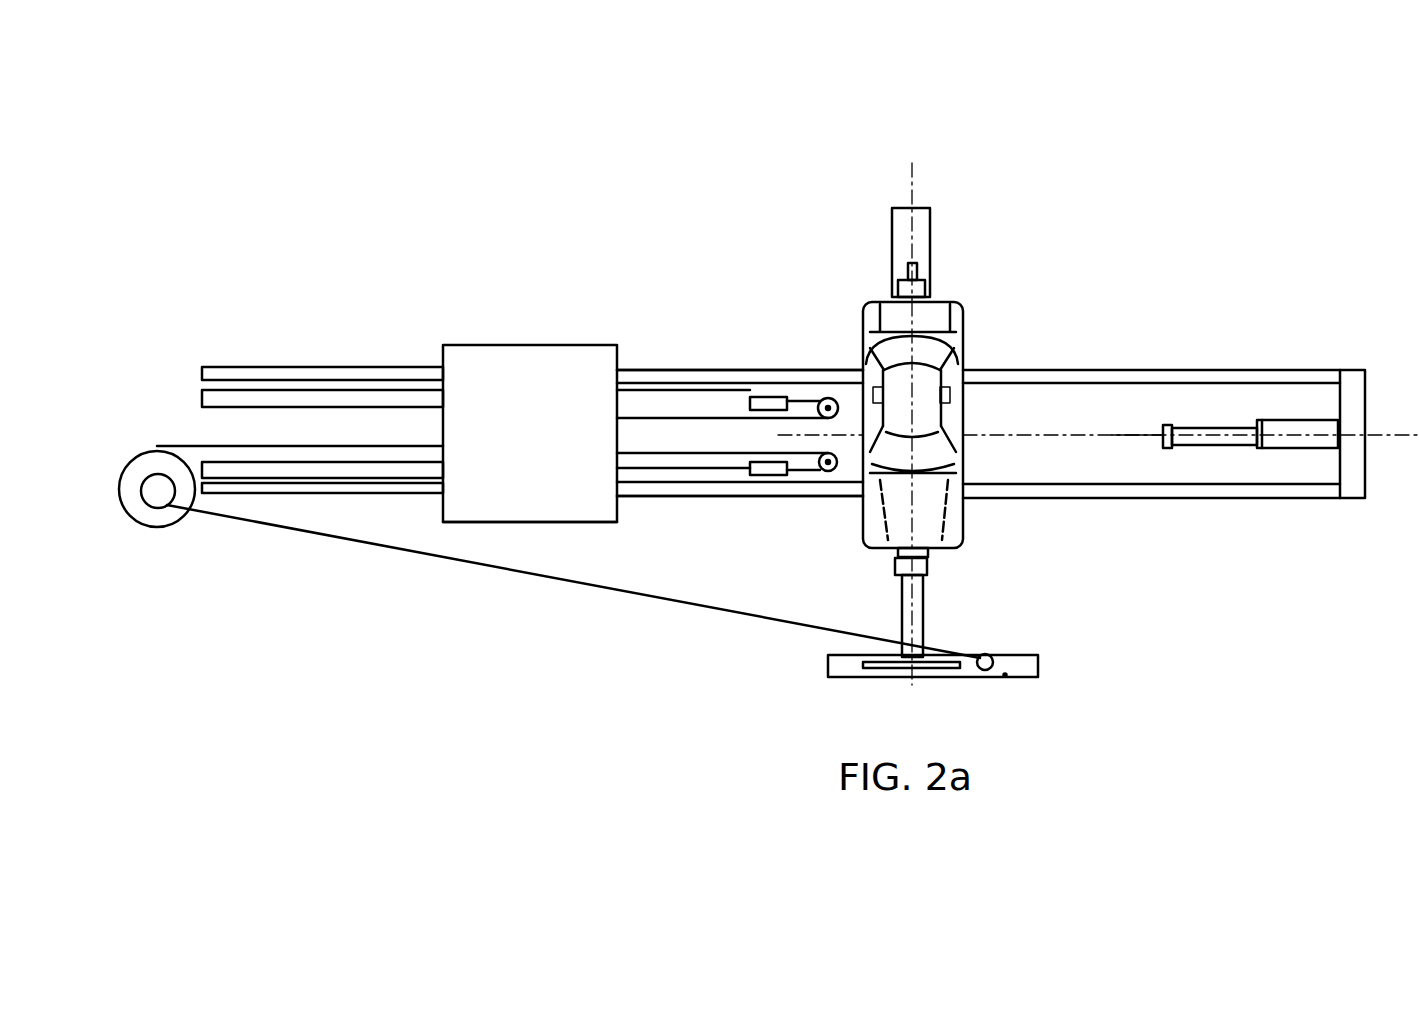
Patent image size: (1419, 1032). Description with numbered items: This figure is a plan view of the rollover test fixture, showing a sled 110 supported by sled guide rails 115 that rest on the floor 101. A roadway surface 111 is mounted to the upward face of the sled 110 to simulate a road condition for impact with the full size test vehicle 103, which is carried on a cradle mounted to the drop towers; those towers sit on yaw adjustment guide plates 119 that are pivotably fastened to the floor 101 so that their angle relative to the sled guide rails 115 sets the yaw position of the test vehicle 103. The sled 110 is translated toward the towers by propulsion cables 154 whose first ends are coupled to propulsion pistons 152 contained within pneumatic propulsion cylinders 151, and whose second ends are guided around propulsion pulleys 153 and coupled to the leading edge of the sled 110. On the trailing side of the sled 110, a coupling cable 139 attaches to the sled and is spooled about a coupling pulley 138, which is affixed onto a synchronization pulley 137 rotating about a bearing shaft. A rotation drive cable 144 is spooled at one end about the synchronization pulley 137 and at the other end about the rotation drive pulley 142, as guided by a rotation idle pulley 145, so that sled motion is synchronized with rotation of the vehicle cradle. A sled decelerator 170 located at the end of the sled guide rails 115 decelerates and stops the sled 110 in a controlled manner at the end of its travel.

The floor 101 is at (1210, 316).
The test vehicle 103 is at (932, 513).
The sled 110 is at (580, 525).
The roadway surface 111 is at (547, 448).
The sled guide rails 115 is at (638, 368).
The yaw adjustment guide plates 119 is at (920, 255).
The synchronization pulley 137 is at (160, 495).
The coupling pulley 138 is at (143, 527).
The coupling cable 139 is at (200, 443).
The rotation drive pulley 142 is at (888, 662).
The rotation drive cable 144 is at (625, 592).
The rotation idle pulley 145 is at (985, 673).
The propulsion cylinders 151 is at (353, 402).
The propulsion pistons 152 is at (767, 397).
The propulsion pulleys 153 is at (828, 398).
The propulsion cables 154 is at (740, 430).
The sled decelerator 170 is at (1292, 438).